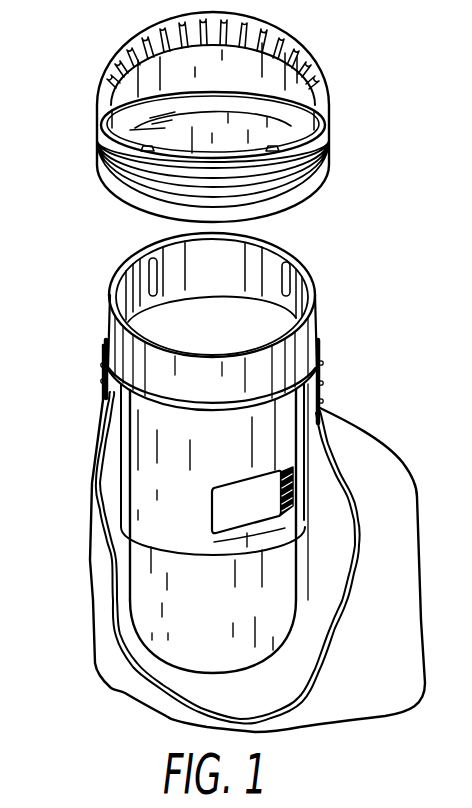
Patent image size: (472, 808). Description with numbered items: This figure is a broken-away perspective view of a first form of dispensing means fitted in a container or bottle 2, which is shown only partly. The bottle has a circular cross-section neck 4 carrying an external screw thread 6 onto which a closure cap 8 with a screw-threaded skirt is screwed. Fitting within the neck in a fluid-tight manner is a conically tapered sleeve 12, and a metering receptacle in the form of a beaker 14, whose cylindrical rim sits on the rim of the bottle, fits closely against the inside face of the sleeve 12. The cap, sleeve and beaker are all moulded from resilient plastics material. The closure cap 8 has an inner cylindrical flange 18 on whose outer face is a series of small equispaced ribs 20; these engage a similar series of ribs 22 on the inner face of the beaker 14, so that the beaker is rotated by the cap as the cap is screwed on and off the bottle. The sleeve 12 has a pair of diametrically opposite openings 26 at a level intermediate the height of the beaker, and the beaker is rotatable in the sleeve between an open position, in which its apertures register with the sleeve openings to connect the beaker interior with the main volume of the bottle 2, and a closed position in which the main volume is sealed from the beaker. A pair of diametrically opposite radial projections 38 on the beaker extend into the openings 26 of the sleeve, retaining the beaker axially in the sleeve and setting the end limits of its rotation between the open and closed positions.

The container or bottle 2 is at (366, 444).
The neck 4 is at (107, 407).
The external screw thread 6 is at (321, 373).
The closure cap 8 is at (257, 111).
The conically tapered sleeve 12 is at (210, 458).
The beaker 14 is at (158, 628).
The inner cylindrical flange 18 is at (315, 118).
The ribs 20 is at (272, 147).
The ribs 22 is at (280, 278).
The openings 26 is at (272, 546).
The radial projections 38 is at (295, 512).